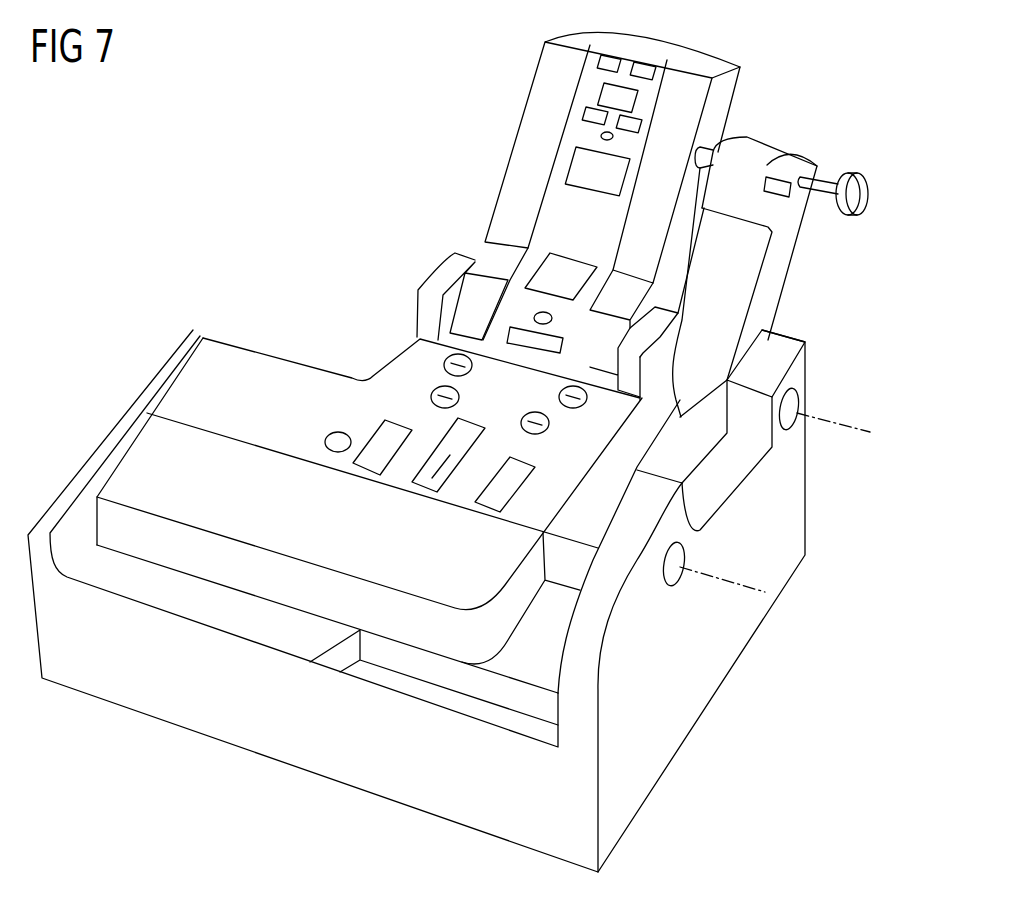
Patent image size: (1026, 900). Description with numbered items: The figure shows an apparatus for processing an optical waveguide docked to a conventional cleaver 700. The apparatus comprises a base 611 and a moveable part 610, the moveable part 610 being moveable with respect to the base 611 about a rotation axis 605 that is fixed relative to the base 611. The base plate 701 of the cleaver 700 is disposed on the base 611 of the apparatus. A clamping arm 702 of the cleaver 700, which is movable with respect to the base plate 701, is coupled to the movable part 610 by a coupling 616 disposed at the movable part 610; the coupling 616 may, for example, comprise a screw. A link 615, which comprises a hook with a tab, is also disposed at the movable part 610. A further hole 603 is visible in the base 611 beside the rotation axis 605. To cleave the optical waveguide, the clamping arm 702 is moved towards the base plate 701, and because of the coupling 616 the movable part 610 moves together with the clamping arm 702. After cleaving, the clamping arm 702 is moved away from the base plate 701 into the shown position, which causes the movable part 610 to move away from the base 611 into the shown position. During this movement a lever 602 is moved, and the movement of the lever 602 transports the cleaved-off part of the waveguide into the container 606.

The cleaver 700 is at (400, 264).
The base plate 701 is at (270, 367).
The clamping arm 702 is at (528, 153).
The lever 602 is at (593, 495).
The lower mounting hole 603 is at (730, 577).
The rotation axis 605 is at (855, 428).
The container 606 is at (440, 693).
The moveable part 610 is at (778, 260).
The base 611 is at (680, 730).
The link 615 is at (787, 168).
The coupling 616 is at (866, 198).